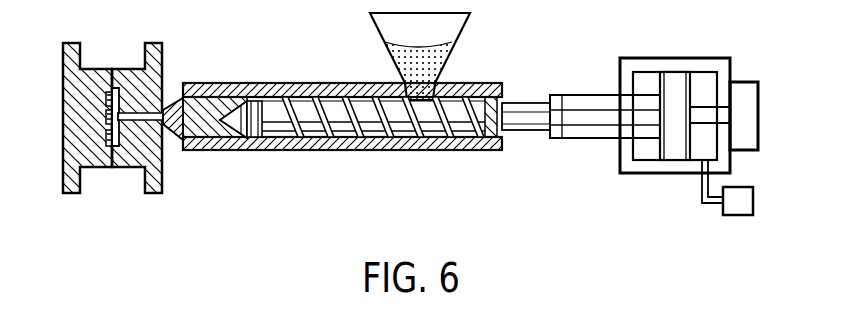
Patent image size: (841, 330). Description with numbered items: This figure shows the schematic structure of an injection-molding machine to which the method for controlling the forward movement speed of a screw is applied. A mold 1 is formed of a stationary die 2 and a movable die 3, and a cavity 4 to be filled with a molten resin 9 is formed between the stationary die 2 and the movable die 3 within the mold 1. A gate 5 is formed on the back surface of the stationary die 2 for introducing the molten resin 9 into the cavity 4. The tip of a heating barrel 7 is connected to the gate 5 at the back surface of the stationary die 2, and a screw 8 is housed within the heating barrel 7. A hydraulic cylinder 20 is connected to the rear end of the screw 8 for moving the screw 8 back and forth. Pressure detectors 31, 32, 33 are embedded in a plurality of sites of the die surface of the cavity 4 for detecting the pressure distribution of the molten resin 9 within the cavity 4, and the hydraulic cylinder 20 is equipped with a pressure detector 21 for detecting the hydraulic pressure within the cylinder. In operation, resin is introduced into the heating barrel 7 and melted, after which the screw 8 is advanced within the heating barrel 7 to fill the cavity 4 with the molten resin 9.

The mold 1 is at (92, 147).
The stationary die 2 is at (137, 124).
The movable die 3 is at (67, 139).
The pressure detector 31 is at (104, 97).
The pressure detector 32 is at (104, 116).
The pressure detector 33 is at (104, 144).
The cavity 4 is at (114, 88).
The gate 5 is at (150, 112).
The heating barrel 7 is at (365, 152).
The screw 8 is at (318, 152).
The molten resin 9 is at (212, 127).
The hydraulic cylinder 20 is at (637, 174).
The pressure detector 21 is at (732, 216).